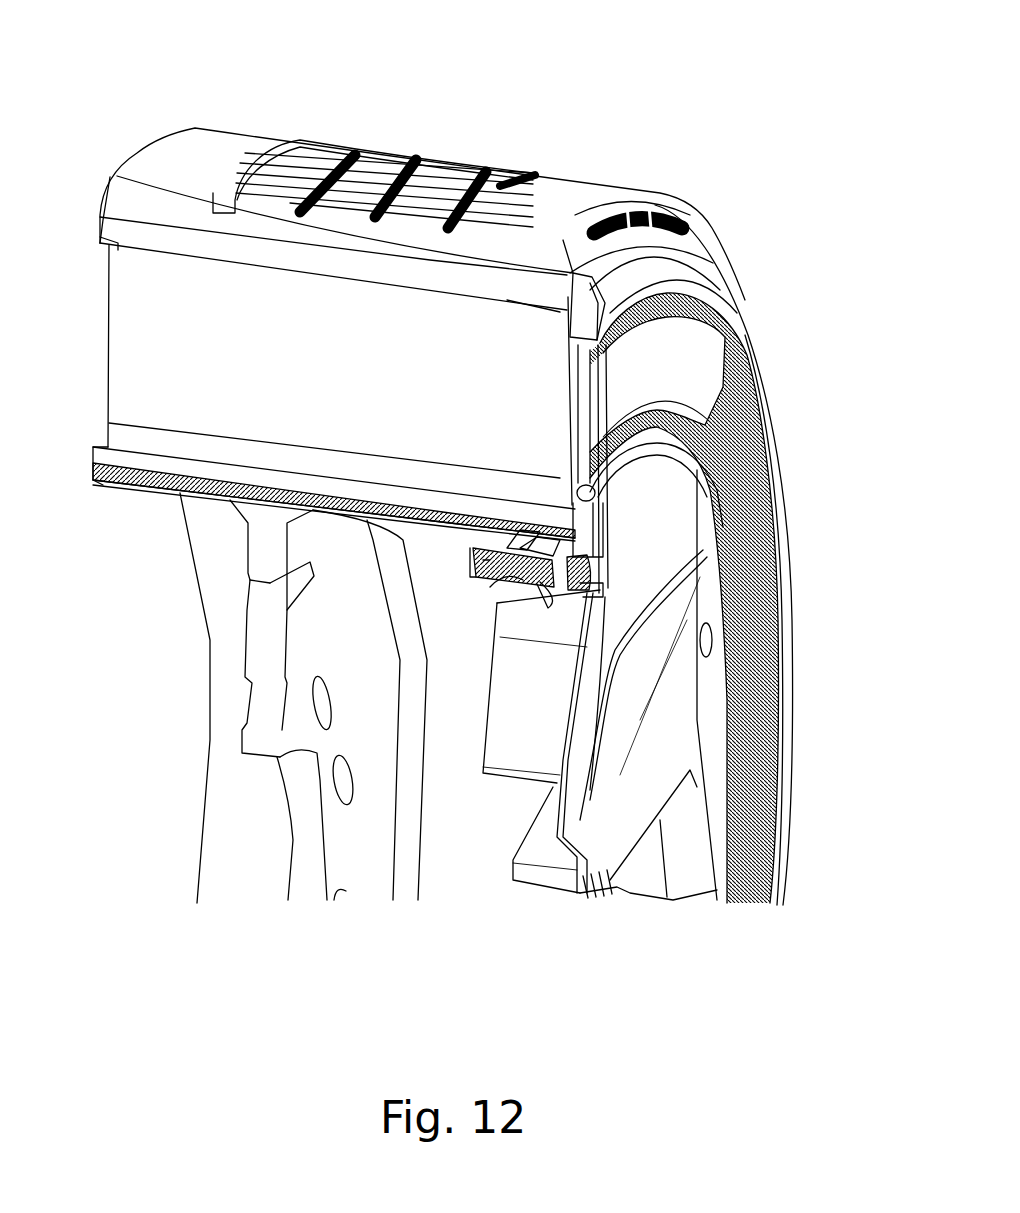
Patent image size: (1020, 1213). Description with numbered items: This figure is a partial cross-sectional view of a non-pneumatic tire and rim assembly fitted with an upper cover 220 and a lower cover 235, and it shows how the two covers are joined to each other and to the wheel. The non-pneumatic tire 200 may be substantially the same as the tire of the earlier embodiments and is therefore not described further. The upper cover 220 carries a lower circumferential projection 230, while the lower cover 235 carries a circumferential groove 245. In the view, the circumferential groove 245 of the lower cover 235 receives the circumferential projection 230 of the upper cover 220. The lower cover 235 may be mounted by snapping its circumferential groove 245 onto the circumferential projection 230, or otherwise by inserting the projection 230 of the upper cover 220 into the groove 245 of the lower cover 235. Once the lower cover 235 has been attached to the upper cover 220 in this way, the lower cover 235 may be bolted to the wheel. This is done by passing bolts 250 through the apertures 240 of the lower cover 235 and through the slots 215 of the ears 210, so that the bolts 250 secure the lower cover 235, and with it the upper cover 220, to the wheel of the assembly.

The non-pneumatic tire 200 is at (112, 90).
The ears 210 is at (520, 583).
The slots 215 is at (543, 551).
The upper cover 220 is at (790, 855).
The circumferential projection 230 is at (570, 492).
The lower cover 235 is at (715, 747).
The apertures 240 is at (597, 577).
The circumferential groove 245 is at (585, 490).
The bolts 250 is at (480, 558).